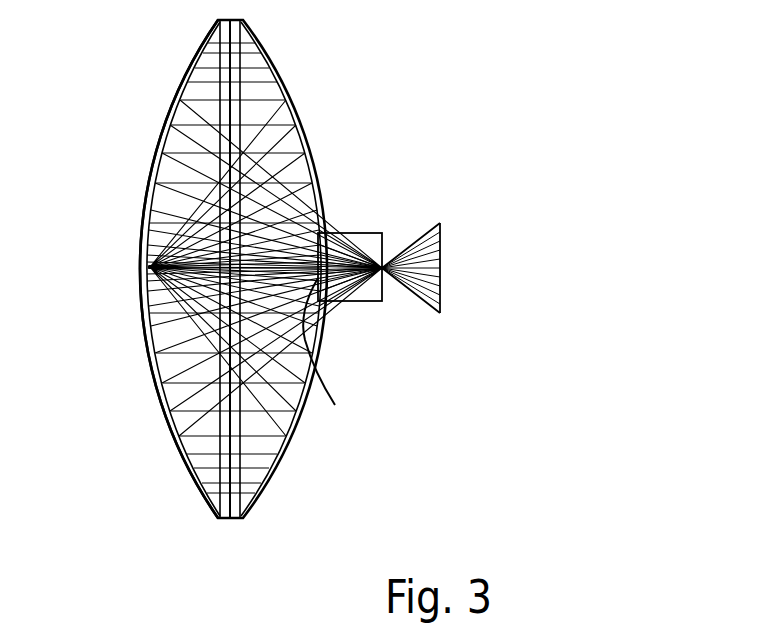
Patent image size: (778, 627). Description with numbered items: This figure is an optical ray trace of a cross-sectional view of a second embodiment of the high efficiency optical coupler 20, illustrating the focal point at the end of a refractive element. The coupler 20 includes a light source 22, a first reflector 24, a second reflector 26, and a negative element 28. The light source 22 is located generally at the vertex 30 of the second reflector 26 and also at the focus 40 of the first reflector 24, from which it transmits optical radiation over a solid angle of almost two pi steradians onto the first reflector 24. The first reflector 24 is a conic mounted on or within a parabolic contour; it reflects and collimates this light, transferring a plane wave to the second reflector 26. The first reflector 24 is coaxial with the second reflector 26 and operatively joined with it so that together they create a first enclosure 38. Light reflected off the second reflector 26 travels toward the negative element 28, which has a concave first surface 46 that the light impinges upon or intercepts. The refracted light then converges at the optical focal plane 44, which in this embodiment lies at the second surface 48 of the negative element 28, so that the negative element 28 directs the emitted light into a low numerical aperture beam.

The high efficiency optical coupler 20 is at (523, 118).
The light source 22 is at (150, 268).
The first reflector 24 is at (297, 107).
The second reflector 26 is at (193, 60).
The negative element 28 is at (362, 233).
The vertex 30 is at (150, 266).
The first enclosure 38 is at (248, 73).
The focus 40 is at (150, 269).
The optical focal plane 44 is at (383, 270).
The concave first surface 46 is at (335, 405).
The second surface 48 is at (383, 240).